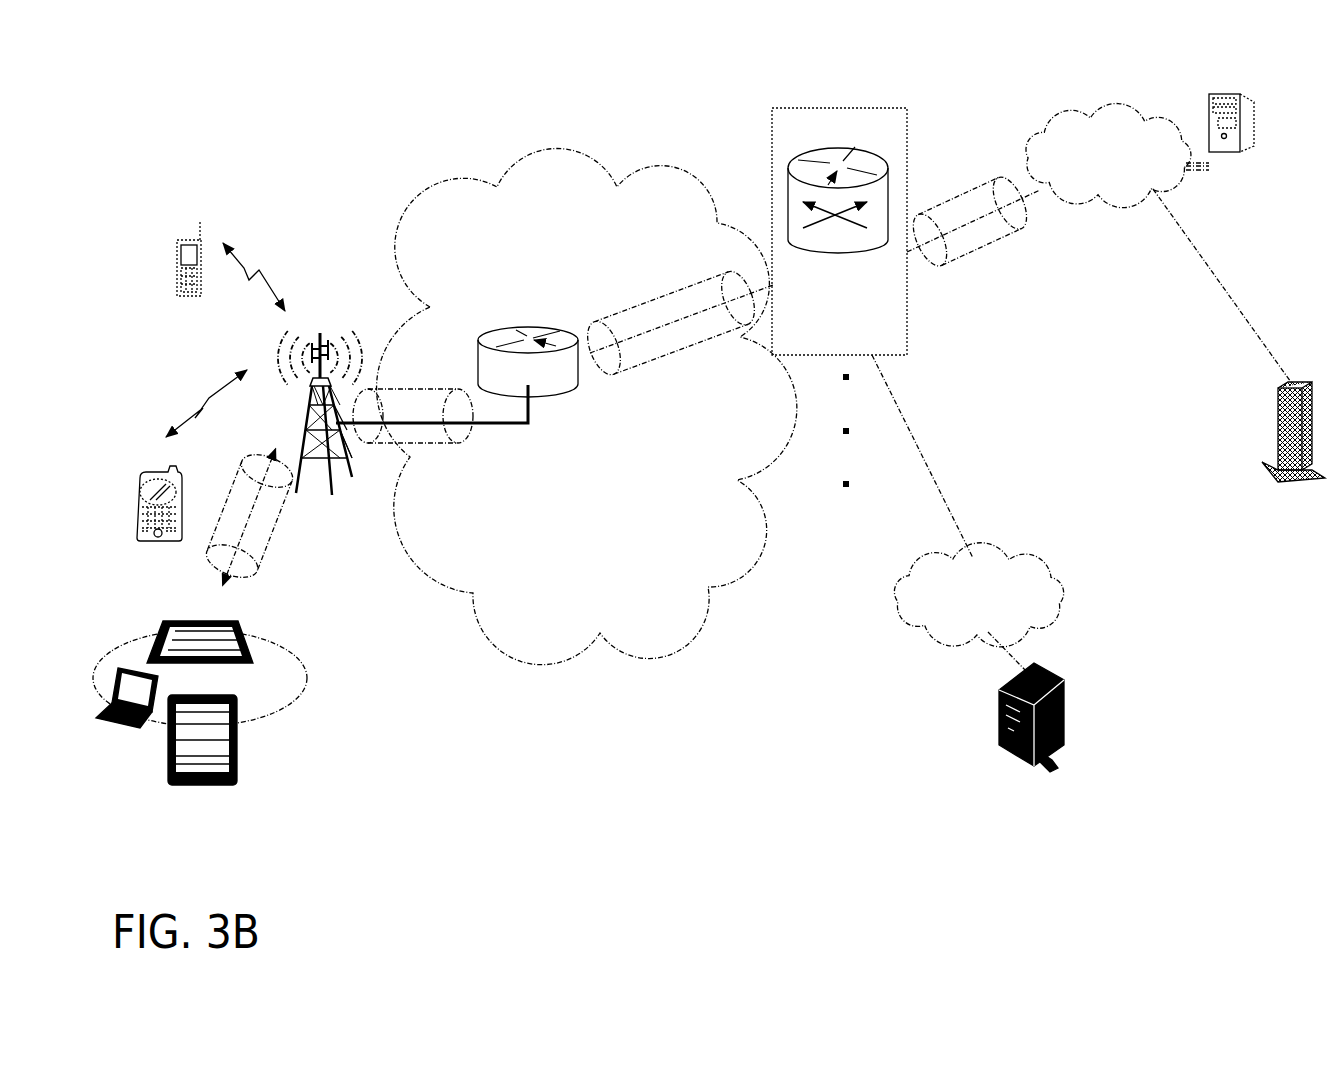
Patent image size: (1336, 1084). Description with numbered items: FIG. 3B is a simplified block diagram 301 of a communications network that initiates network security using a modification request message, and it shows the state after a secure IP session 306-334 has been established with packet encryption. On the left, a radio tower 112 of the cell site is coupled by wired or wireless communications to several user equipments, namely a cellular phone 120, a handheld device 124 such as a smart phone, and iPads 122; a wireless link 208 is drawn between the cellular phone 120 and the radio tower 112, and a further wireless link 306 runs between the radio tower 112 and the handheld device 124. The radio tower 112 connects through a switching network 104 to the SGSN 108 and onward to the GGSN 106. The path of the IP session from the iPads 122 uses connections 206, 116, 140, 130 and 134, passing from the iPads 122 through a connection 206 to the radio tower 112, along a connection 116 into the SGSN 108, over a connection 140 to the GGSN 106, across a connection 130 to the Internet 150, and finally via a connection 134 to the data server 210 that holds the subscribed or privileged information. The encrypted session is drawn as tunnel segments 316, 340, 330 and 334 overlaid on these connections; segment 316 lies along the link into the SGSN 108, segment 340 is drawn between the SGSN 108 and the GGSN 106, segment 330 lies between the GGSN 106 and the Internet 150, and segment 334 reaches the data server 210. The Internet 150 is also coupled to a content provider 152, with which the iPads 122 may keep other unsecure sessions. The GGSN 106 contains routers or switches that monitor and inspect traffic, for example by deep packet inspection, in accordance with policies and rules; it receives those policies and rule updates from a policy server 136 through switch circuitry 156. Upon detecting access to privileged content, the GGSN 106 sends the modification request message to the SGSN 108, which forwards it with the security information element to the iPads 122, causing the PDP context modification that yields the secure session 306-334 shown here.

The block diagram 301 is at (262, 94).
The cellular phone 120 is at (189, 240).
The wireless link 208 is at (267, 283).
The secure IP session 306 is at (258, 457).
The handheld device 124 is at (153, 477).
The radio tower 112 is at (333, 497).
The connection 206 is at (262, 505).
The iPads 122 is at (287, 697).
The switching network 104 is at (547, 148).
The secure IP session 316 is at (402, 445).
The connection 116 is at (483, 427).
The SGSN 108 is at (530, 325).
The connection 140 is at (687, 307).
The tunnel 340 is at (677, 373).
The GGSN 106 is at (839, 219).
The connection 130 is at (933, 260).
The secure IP session 330 is at (982, 248).
The Internet 150 is at (1108, 155).
The connection 134 is at (1196, 165).
The secure IP session 334 is at (1196, 170).
The data server 210 is at (1250, 140).
The content provider 152 is at (1279, 428).
The switch circuitry 156 is at (935, 558).
The policy server 136 is at (997, 714).